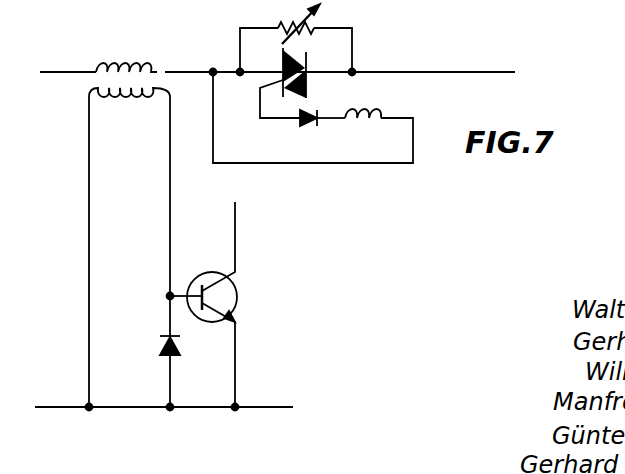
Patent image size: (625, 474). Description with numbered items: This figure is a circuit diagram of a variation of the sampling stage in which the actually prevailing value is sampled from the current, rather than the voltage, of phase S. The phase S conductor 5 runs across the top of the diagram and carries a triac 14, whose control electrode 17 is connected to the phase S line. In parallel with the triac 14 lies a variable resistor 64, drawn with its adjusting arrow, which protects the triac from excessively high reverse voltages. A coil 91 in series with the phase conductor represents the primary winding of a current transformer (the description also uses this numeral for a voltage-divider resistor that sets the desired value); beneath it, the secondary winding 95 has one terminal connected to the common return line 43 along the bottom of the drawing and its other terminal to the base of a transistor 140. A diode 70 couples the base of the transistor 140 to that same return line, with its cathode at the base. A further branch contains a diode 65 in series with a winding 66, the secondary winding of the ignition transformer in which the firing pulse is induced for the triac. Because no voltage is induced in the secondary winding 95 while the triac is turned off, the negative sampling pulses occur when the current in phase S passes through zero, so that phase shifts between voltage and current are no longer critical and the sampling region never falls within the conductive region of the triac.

The input line 5 is at (56, 73).
The resistor 91 is at (152, 60).
The secondary winding 95 is at (133, 104).
The variable resistor 64 is at (313, 37).
The triac 14 is at (306, 92).
The control electrode 17 is at (268, 84).
The diode 65 is at (296, 123).
The secondary winding of the ignition transformer 66 is at (366, 114).
The diode 70 is at (160, 345).
The transistor 140 is at (237, 297).
The ground line 43 is at (124, 410).